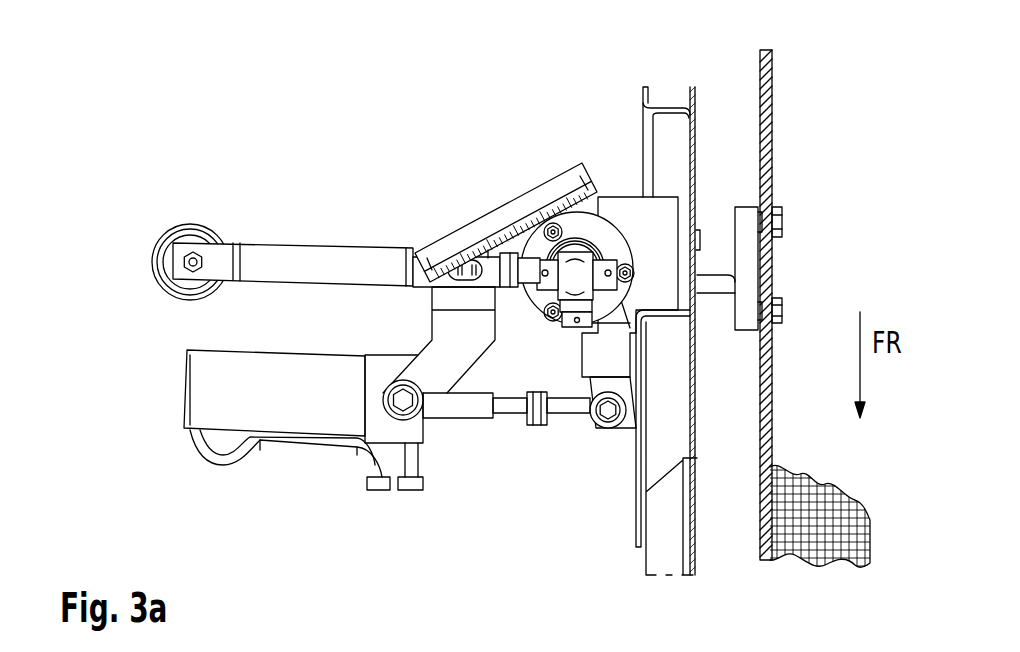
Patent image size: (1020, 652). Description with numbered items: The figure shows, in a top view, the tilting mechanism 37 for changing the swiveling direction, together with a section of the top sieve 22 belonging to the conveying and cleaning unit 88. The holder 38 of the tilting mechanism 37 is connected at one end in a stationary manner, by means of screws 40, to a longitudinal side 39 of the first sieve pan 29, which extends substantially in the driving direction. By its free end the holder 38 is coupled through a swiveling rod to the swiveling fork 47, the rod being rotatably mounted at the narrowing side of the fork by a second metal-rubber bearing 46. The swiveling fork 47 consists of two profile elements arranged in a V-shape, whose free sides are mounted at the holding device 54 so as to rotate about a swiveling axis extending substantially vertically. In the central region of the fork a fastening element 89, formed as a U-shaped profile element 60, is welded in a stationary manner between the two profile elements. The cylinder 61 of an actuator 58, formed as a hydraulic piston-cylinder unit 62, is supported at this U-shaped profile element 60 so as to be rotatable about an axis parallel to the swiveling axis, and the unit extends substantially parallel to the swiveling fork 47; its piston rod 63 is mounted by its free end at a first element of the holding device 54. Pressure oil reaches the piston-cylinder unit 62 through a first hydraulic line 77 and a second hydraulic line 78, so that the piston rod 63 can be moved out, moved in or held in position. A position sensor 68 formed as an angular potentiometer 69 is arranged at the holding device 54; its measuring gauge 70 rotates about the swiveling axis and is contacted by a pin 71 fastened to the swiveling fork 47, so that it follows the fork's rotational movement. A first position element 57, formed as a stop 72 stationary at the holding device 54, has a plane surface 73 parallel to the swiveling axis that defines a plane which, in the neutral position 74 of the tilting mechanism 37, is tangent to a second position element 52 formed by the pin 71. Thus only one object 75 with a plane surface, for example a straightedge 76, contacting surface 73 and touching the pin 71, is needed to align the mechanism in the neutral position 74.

The tilting mechanism 37 is at (228, 108).
The neutral position 74 is at (387, 118).
The second metal-rubber bearing 46 is at (185, 222).
The swiveling fork 47 is at (283, 232).
The second position element 52 is at (456, 216).
The pin 71 is at (462, 260).
The object 75 is at (368, 222).
The straightedge 76 is at (432, 248).
The first position element 57 is at (506, 168).
The stop 72 is at (568, 176).
The plane surface 73 is at (580, 178).
The measuring gauge 70 is at (489, 256).
The holding device 54 is at (633, 203).
The holder 38 is at (716, 283).
The first sieve pan 29 is at (826, 295).
The longitudinal side 39 is at (766, 80).
The screws 40 is at (783, 222).
The U-shaped profile element 60 is at (385, 340).
The fastening element 89 is at (436, 312).
The hydraulic piston-cylinder unit 62 is at (235, 410).
The actuator 58 is at (178, 389).
The cylinder 61 is at (187, 418).
The second hydraulic line 78 is at (327, 447).
The first hydraulic line 77 is at (420, 462).
The piston rod 63 is at (463, 405).
The position sensor 68 is at (564, 301).
The angular potentiometer 69 is at (573, 282).
The top sieve 22 is at (830, 548).
The conveying and cleaning unit 88 is at (812, 537).